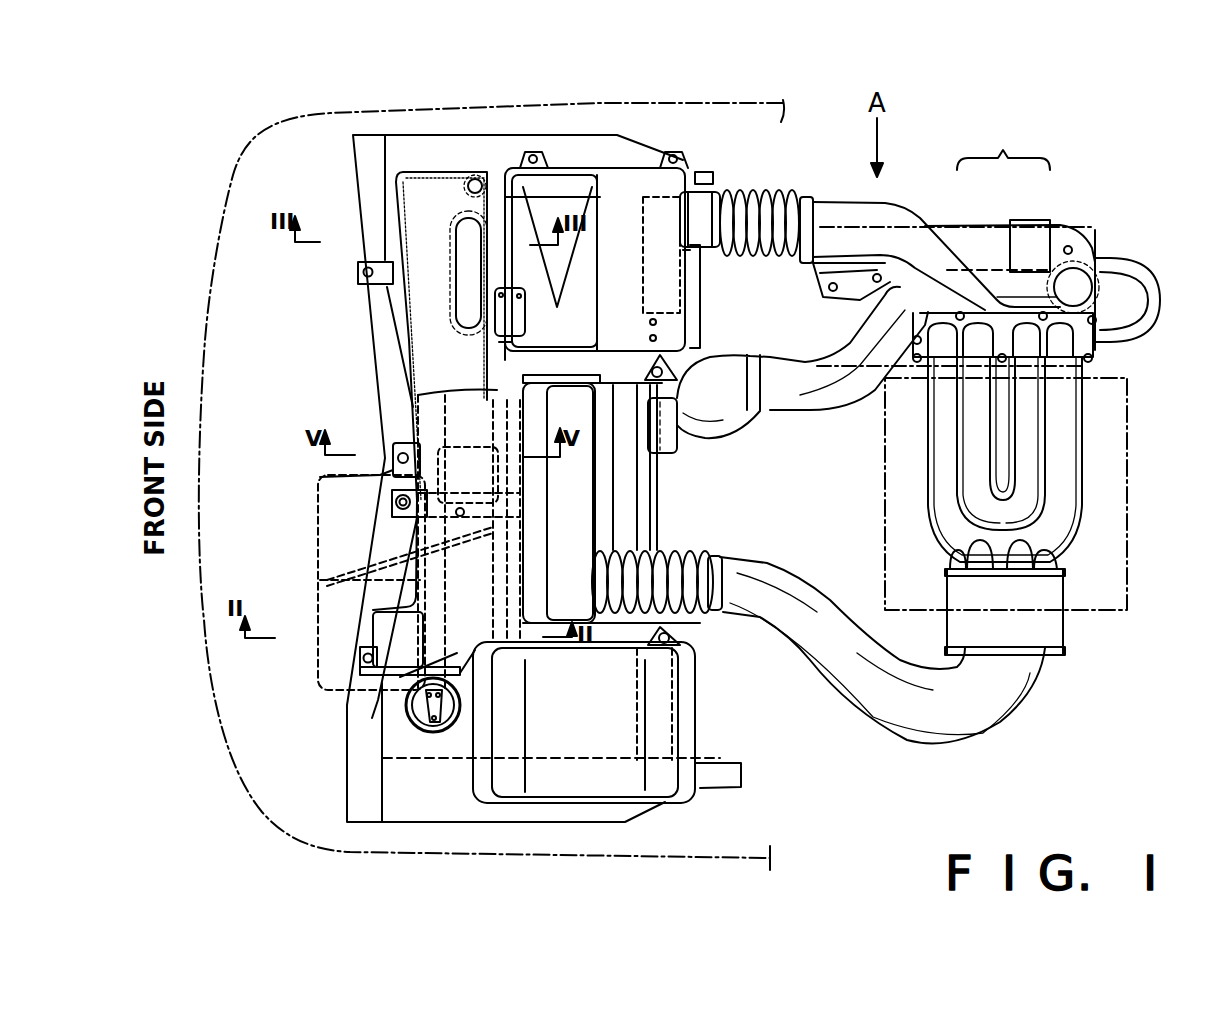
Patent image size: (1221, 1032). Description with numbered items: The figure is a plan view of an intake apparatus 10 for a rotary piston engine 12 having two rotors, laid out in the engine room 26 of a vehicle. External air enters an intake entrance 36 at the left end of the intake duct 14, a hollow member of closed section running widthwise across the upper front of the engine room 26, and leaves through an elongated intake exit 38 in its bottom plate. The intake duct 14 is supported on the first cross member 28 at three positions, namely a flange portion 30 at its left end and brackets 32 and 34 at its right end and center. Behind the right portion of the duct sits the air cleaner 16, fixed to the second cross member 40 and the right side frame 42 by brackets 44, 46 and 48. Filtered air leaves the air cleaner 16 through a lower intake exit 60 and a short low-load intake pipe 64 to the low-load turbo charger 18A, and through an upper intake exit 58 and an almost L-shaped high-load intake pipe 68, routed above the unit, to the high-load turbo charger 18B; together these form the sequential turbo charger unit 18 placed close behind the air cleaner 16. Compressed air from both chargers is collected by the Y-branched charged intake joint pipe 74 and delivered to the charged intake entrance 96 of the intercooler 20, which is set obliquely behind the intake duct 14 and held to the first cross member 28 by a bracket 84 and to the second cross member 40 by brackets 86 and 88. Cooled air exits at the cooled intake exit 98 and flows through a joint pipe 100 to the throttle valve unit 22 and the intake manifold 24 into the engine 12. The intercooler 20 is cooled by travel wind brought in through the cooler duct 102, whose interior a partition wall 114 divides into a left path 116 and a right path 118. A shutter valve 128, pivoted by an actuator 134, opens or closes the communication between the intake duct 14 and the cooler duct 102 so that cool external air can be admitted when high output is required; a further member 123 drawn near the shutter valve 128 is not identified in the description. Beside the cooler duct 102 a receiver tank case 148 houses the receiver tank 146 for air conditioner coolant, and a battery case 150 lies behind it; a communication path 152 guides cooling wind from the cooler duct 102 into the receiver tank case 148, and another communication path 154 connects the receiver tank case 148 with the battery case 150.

The intake apparatus 10 is at (302, 309).
The rotary piston engine 12 is at (1130, 388).
The intake duct 14 is at (410, 155).
The air cleaner 16 is at (572, 150).
The turbo charger unit 18 is at (1058, 242).
The low-load turbo charger 18A is at (932, 212).
The high-load turbo charger 18B is at (1028, 206).
The intercooler 20 is at (664, 497).
The throttle valve unit 22 is at (1063, 630).
The intake manifold 24 is at (1100, 458).
The engine room 26 is at (856, 497).
The first cross member 28 is at (372, 370).
The flange portion 30 is at (360, 660).
The bracket 32 is at (370, 258).
The bracket 34 is at (400, 444).
The intake entrance 36 is at (382, 632).
The intake exit 38 is at (465, 250).
The second cross member 40 is at (682, 281).
The right side frame 42 is at (615, 142).
The bracket 44 is at (566, 366).
The bracket 46 is at (457, 190).
The bracket 48 is at (707, 175).
The upper intake exit 58 is at (680, 238).
The lower intake exit 60 is at (690, 182).
The low-load intake pipe 64 is at (767, 188).
The high-load intake pipe 68 is at (897, 216).
The charged intake joint pipe 74 is at (840, 412).
The bracket 84 is at (400, 518).
The bracket 86 is at (680, 640).
The bracket 88 is at (678, 380).
The charged intake entrance 96 is at (705, 452).
The cooled intake exit 98 is at (596, 560).
The joint pipe 100 is at (814, 588).
The cooler duct 102 is at (316, 700).
The partition wall 114 is at (326, 575).
The left path 116 is at (326, 653).
The right path 118 is at (340, 520).
The hidden member 123 is at (452, 455).
The shutter valve 128 is at (473, 467).
The actuator 134 is at (525, 312).
The receiver tank 146 is at (445, 737).
The receiver tank case 148 is at (418, 732).
The battery case 150 is at (580, 803).
The communication path 152 is at (477, 683).
The communication path 154 is at (462, 720).